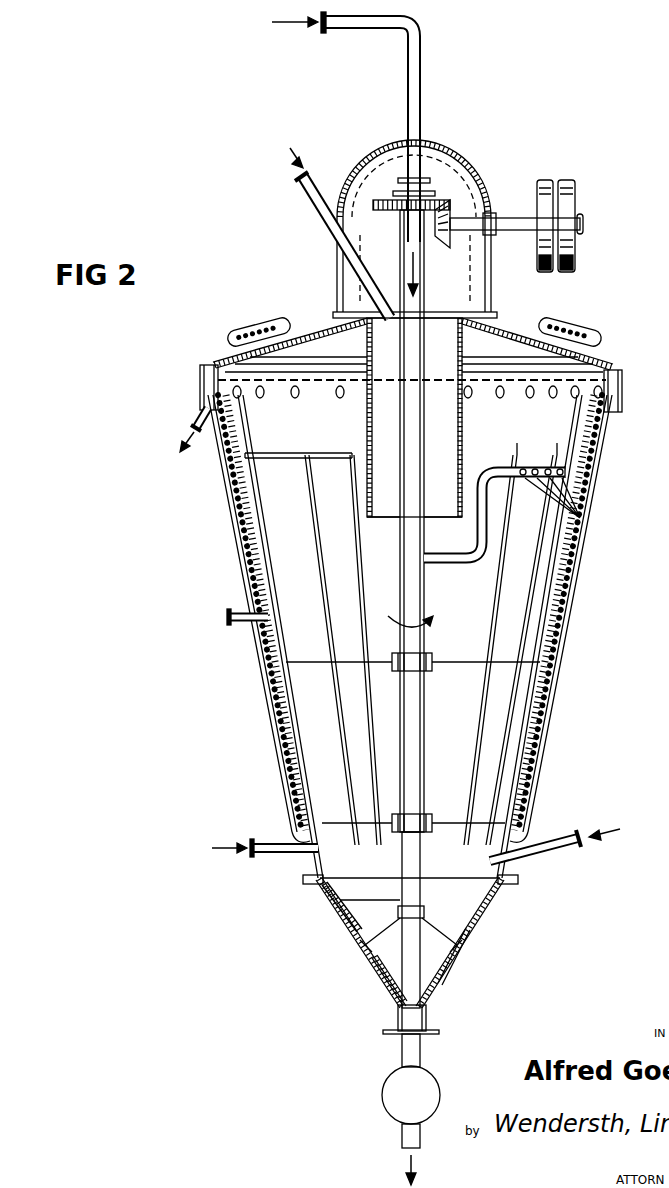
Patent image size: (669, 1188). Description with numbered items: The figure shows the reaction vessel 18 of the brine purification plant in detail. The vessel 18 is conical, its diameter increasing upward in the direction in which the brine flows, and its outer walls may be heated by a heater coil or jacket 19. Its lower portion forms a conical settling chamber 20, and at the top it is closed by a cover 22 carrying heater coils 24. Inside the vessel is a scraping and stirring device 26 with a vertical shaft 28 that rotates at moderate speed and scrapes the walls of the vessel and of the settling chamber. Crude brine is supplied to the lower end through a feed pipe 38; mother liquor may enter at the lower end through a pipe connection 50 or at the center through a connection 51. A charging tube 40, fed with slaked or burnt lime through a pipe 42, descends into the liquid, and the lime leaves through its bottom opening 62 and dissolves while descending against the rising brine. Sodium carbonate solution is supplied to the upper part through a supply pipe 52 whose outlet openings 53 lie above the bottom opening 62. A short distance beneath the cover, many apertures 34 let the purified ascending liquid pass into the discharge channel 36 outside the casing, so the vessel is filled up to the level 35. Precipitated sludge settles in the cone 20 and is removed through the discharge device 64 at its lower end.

The reaction vessel 18 is at (285, 542).
The jacket 19 is at (275, 757).
The settling chamber 20 is at (472, 936).
The cover 22 is at (612, 364).
The heater coils 24 is at (265, 322).
The scraping and stirring device 26 is at (336, 694).
The vertical shaft 28 is at (412, 771).
The apertures 34 is at (340, 386).
The level 35 is at (517, 382).
The discharge channel 36 is at (200, 392).
The feed pipe 38 is at (540, 855).
The charging tube 40 is at (367, 418).
The pipe 42 is at (322, 208).
The pipe connection 50 is at (270, 860).
The connection 51 is at (244, 624).
The supply pipe 52 is at (486, 510).
The outlet openings 53 is at (571, 507).
The bottom opening 62 is at (398, 517).
The discharge device 64 is at (385, 1088).